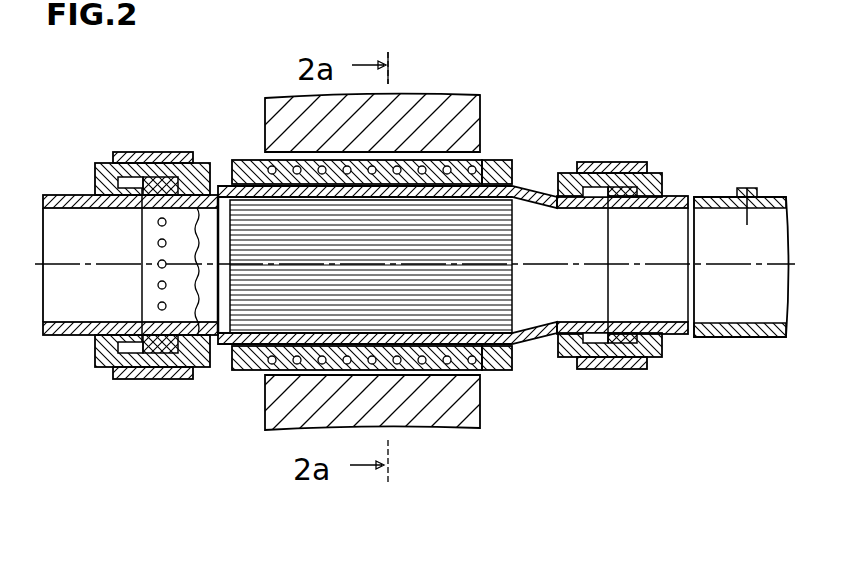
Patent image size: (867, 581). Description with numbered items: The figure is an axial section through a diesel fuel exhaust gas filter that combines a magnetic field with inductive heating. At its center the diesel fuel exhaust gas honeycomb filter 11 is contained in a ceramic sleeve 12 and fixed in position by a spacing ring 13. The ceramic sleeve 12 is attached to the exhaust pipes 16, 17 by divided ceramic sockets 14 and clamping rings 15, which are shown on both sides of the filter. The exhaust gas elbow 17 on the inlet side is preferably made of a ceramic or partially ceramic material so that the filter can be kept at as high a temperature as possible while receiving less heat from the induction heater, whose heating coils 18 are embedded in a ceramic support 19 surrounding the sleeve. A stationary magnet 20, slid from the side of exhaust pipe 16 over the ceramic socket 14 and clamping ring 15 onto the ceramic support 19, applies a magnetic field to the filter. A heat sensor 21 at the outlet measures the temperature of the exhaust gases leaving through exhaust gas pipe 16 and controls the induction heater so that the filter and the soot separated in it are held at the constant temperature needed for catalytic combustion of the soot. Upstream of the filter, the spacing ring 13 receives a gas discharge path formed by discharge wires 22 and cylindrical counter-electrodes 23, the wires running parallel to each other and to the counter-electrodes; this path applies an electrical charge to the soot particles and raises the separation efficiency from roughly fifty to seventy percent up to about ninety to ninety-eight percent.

The diesel fuel exhaust gas honeycomb filter 11 is at (516, 248).
The ceramic sleeve 12 is at (533, 192).
The spacing ring 13 is at (140, 212).
The divided ceramic socket 14 is at (96, 182).
The clamping ring 15 is at (125, 152).
The exhaust pipe 16 is at (672, 212).
The exhaust gas elbow 17 is at (86, 212).
The heating coil 18 is at (483, 162).
The ceramic support 19 is at (246, 162).
The stationary magnet 20 is at (266, 100).
The heat sensor 21 is at (748, 188).
The discharge wire 22 is at (219, 186).
The cylindrical counter-electrode 23 is at (156, 285).